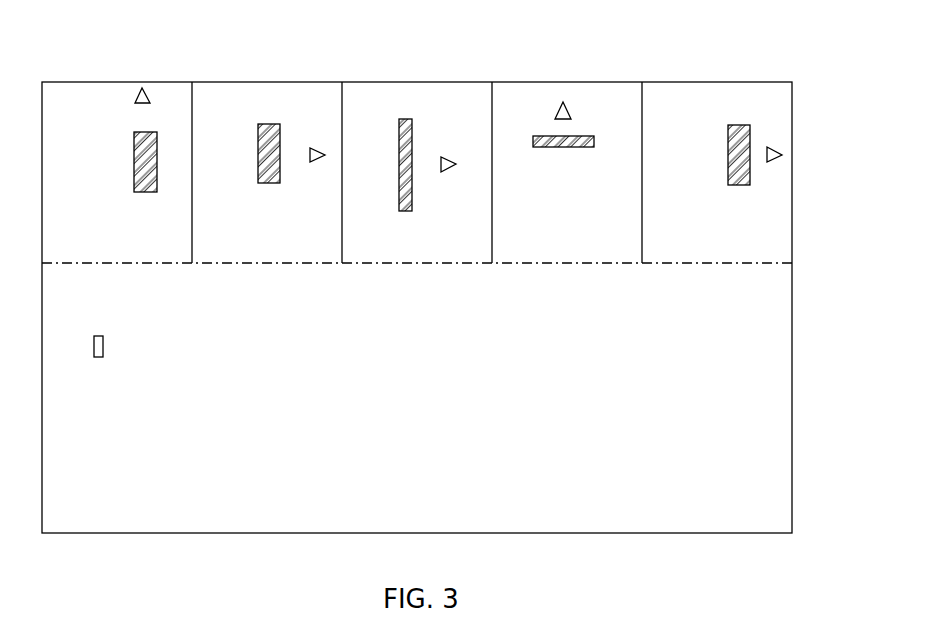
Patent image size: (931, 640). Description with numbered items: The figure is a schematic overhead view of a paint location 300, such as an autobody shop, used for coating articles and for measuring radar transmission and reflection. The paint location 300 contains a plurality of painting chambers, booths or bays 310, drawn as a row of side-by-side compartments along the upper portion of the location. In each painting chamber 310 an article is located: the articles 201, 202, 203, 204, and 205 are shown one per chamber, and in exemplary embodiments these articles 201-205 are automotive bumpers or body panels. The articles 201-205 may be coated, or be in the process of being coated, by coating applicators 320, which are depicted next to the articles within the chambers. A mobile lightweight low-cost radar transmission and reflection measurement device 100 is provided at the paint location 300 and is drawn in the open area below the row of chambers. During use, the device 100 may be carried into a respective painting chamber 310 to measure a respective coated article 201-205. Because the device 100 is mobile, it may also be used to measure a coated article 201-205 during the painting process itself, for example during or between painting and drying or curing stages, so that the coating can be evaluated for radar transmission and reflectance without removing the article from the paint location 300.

The mobile lightweight low-cost radar transmission and reflection measurement device 100 is at (103, 348).
The article 201 is at (134, 170).
The article 202 is at (258, 170).
The article 203 is at (402, 187).
The article 204 is at (555, 147).
The article 205 is at (728, 178).
The paint location 300 is at (742, 493).
The painting chamber 310 is at (792, 68).
The coating applicator 320 is at (774, 143).